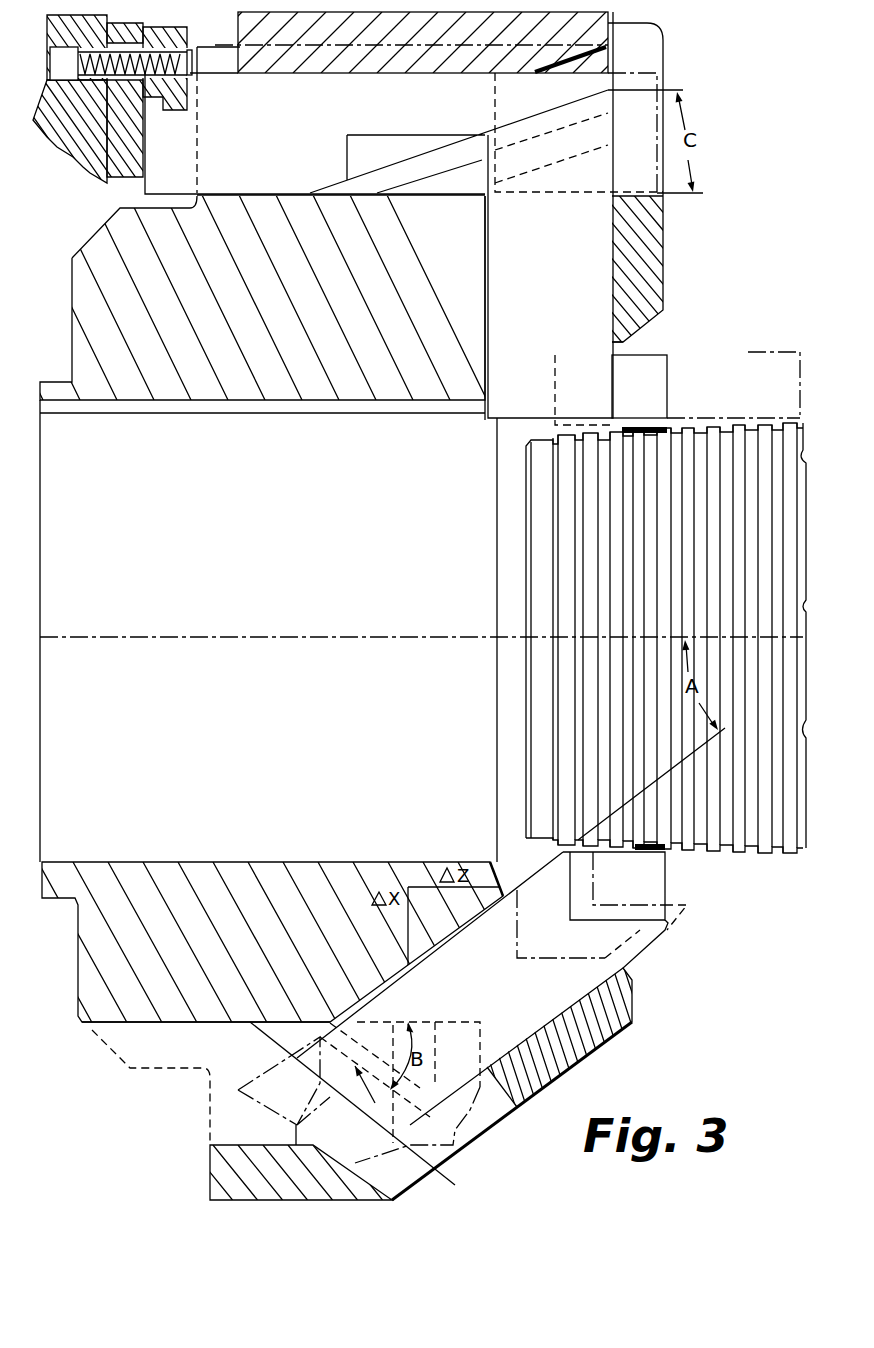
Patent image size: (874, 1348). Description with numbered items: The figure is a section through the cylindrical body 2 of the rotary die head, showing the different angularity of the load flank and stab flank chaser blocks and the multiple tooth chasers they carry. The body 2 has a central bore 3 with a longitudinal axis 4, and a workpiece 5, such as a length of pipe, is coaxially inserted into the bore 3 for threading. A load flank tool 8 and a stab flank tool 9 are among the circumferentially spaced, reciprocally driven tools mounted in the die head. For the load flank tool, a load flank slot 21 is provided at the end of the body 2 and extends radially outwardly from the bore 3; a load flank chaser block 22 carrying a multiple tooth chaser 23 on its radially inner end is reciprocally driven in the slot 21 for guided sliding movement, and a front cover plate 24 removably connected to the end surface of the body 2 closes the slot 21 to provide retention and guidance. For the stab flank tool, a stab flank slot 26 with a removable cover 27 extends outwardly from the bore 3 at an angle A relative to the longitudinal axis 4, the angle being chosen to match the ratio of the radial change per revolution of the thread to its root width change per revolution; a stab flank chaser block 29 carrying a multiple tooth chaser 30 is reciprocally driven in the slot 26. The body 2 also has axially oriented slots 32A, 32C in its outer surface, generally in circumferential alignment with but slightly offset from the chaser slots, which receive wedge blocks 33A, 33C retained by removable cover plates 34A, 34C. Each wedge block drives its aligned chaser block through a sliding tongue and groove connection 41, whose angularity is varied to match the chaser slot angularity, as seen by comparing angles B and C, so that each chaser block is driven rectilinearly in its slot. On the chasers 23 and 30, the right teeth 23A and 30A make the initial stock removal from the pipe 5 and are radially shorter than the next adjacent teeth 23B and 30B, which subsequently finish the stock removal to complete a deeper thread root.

The cylindrical body 2 is at (266, 372).
The central bore 3 is at (226, 511).
The longitudinal axis 4 is at (265, 637).
The workpiece 5 is at (747, 845).
The load flank tool 8 is at (628, 348).
The stab flank tool 9 is at (648, 958).
The load flank slot 21 is at (483, 295).
The load flank chaser block 22 is at (563, 292).
The multiple tooth chaser 23 is at (660, 410).
The right tooth 23A is at (667, 442).
The next adjacent tooth 23B is at (637, 442).
The front cover plate 24 is at (640, 262).
The stab flank slot 26 is at (407, 957).
The removable cover 27 is at (568, 1048).
The stab flank chaser block 29 is at (573, 973).
The multiple tooth chaser 30 is at (675, 861).
The right tooth 30A is at (665, 842).
The next adjacent tooth 30B is at (645, 842).
The axially oriented slot 32A is at (272, 196).
The axially oriented slot 32C is at (243, 1022).
The wedge block 33A is at (293, 122).
The wedge block 33C is at (236, 1058).
The removable cover plate 34A is at (387, 38).
The removable cover plate 34C is at (240, 1192).
The tongue and groove connection 41 is at (486, 134).